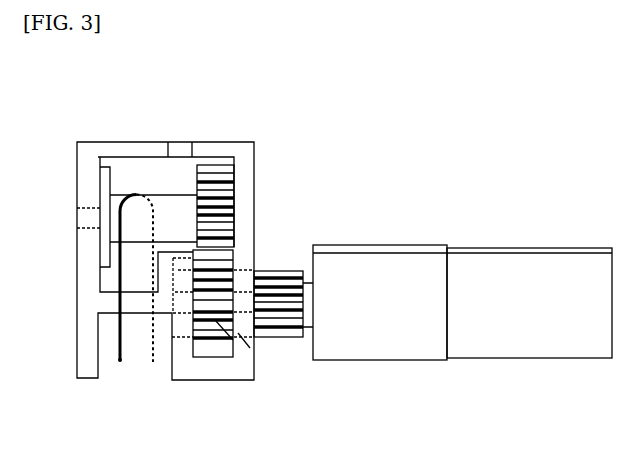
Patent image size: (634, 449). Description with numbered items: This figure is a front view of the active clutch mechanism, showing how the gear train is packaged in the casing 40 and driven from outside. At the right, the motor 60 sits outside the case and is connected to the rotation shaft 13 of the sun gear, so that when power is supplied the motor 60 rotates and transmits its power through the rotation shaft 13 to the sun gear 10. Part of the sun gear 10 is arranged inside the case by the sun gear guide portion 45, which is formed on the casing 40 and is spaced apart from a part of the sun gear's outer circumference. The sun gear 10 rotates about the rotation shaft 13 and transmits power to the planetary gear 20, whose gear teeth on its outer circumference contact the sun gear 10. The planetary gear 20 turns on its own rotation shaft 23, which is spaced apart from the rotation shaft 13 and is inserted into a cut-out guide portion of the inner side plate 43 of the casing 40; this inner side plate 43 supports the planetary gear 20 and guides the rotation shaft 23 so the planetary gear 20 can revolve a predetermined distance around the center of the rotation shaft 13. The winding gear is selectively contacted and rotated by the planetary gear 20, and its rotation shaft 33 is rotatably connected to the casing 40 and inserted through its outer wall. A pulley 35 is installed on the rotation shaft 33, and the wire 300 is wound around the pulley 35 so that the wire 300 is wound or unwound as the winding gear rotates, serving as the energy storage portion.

The sun gear 10 is at (278, 271).
The rotation shaft of the sun gear 13 is at (316, 283).
The planetary gear 20 is at (217, 352).
The rotation shaft of the planetary gear 23 is at (222, 322).
The rotation shaft of the winding gear 33 is at (236, 207).
The pulley 35 is at (178, 195).
The casing 40 is at (208, 142).
The inner side plate 43 is at (185, 368).
The sun gear guide portion 45 is at (238, 335).
The motor 60 is at (430, 232).
The wire 300 is at (123, 358).